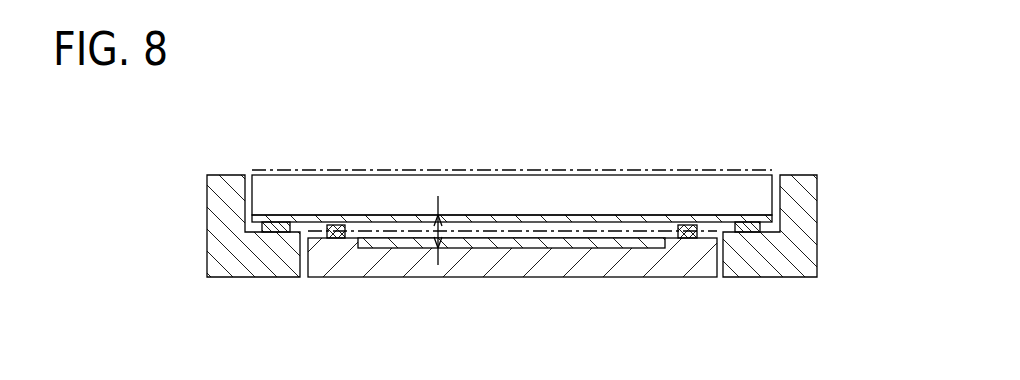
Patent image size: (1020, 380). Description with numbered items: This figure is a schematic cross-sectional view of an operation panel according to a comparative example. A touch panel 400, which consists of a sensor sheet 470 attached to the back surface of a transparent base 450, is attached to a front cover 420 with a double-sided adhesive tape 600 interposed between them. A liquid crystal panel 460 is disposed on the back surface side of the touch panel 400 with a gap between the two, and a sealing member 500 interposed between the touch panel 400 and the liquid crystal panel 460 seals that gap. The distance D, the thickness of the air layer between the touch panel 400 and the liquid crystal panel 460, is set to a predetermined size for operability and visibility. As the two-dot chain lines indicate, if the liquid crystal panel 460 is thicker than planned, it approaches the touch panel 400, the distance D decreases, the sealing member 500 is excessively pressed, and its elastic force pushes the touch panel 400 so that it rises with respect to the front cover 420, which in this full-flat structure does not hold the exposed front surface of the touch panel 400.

The touch panel 400 is at (615, 115).
The front cover 420 is at (218, 215).
The transparent base 450 is at (593, 190).
The liquid crystal panel 460 is at (556, 278).
The sensor sheet 470 is at (527, 218).
The sealing member 500 is at (336, 238).
The double-sided adhesive tape 600 is at (276, 222).
The distance D is at (437, 214).